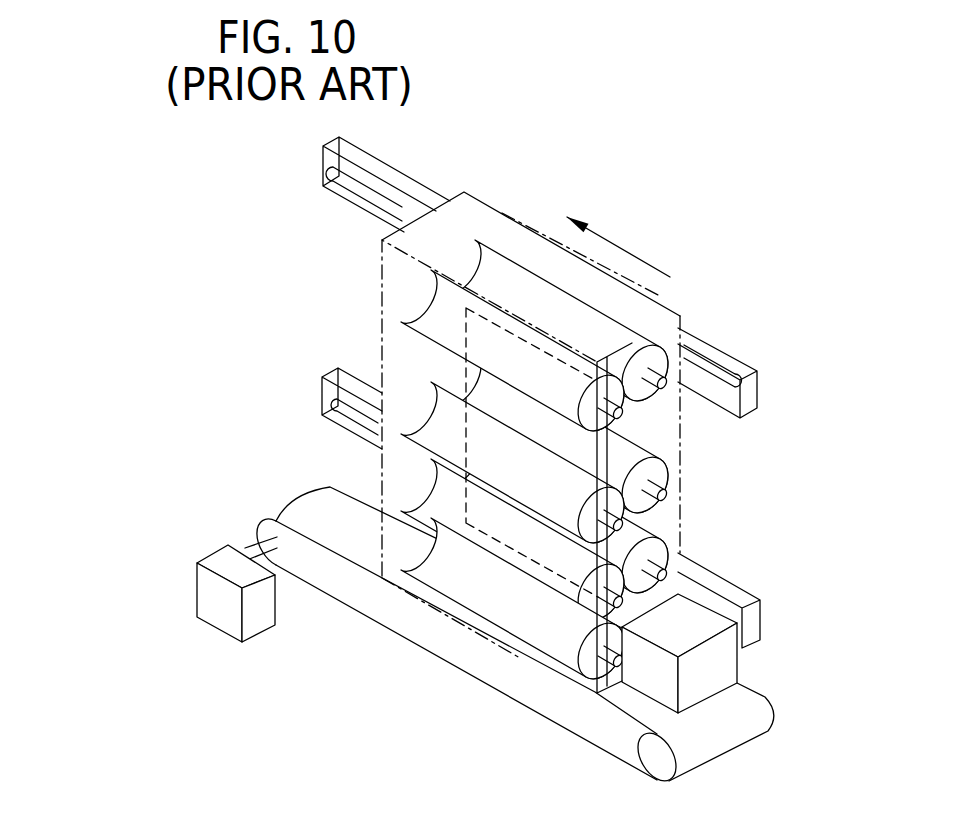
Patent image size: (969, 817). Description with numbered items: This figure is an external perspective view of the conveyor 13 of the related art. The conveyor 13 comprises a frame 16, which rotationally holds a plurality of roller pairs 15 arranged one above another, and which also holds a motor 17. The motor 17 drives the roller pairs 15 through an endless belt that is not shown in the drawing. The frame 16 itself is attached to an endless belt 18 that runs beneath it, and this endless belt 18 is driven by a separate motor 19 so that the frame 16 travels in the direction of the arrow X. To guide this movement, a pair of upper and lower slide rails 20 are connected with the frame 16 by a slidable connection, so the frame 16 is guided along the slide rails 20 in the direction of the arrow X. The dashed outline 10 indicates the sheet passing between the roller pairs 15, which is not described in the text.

The conveyor 13 is at (178, 297).
The recording medium / sheet 10 is at (465, 330).
The roller pairs 15 is at (473, 263).
The frame 16 is at (380, 274).
The motor 17 is at (720, 670).
The endless belt 18 is at (763, 716).
The motor 19 is at (220, 557).
The slide rails 20 is at (738, 358).